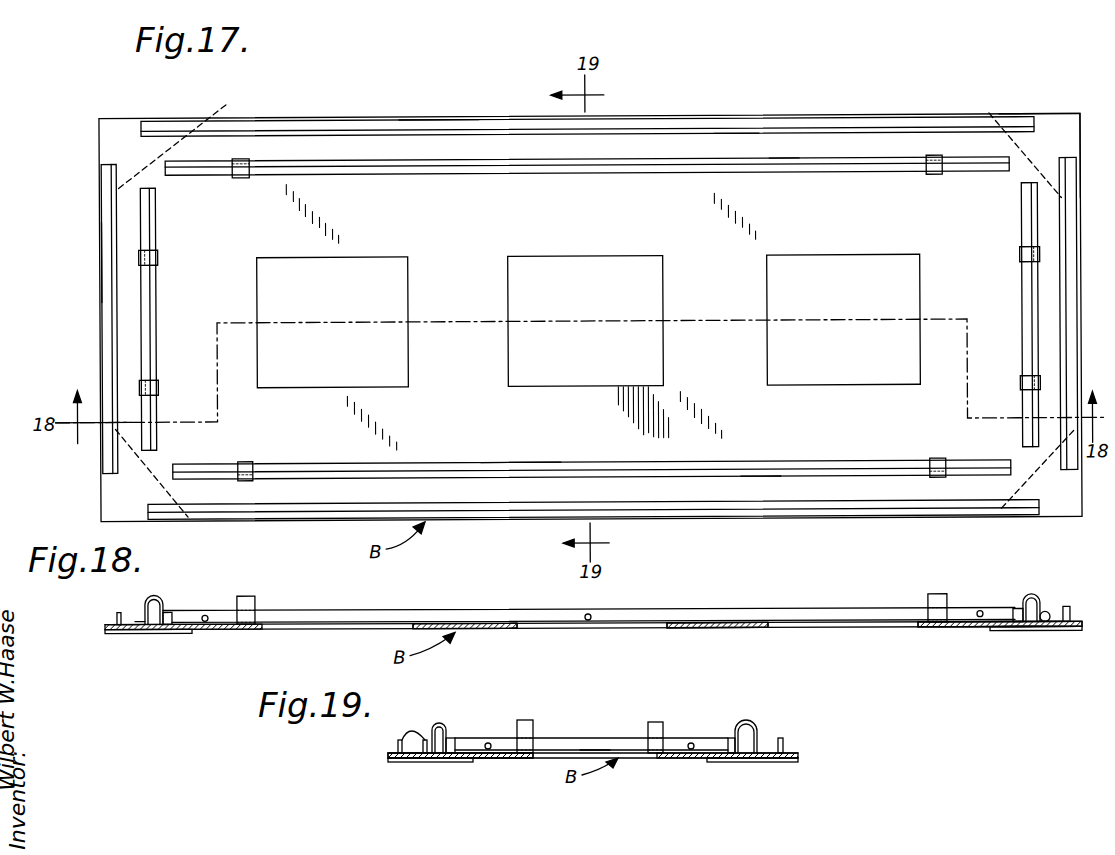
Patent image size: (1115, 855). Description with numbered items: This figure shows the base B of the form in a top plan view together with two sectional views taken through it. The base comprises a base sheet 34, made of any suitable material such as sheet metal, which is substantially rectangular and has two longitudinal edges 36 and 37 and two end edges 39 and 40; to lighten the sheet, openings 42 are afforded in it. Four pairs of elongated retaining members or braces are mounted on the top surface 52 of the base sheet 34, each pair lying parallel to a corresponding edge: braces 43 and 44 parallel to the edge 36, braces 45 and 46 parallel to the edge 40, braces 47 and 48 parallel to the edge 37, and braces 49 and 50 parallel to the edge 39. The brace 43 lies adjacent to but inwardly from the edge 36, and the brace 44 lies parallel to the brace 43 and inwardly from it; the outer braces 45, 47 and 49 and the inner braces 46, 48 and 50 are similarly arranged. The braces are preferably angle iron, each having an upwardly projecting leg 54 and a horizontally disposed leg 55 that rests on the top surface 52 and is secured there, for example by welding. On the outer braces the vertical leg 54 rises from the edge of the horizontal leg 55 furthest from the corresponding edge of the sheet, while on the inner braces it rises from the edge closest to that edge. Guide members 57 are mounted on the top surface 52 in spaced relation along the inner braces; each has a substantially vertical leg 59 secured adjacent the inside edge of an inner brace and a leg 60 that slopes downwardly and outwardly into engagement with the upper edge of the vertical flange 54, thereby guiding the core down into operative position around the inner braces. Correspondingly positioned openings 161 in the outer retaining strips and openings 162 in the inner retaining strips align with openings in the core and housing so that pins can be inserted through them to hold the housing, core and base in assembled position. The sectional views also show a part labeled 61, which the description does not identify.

In FIG. 17, the base sheet 34 is at (760, 465).
In FIG. 18, the base sheet 34 is at (725, 630).
In FIG. 19, the base sheet 34 is at (665, 760).
In FIG. 17, the longitudinal edge 36 is at (297, 120).
In FIG. 19, the longitudinal edge 36 is at (800, 760).
In FIG. 17, the longitudinal edge 37 is at (325, 517).
In FIG. 19, the longitudinal edge 37 is at (388, 760).
In FIG. 17, the end edge 39 is at (100, 245).
In FIG. 18, the end edge 39 is at (110, 632).
In FIG. 17, the end edge 40 is at (1081, 116).
In FIG. 18, the end edge 40 is at (1080, 632).
In FIG. 17, the openings 42 is at (383, 256).
In FIG. 18, the openings 42 is at (385, 623).
In FIG. 19, the openings 42 is at (520, 760).
In FIG. 17, the outer brace 43 is at (437, 129).
In FIG. 19, the outer brace 43 is at (782, 738).
In FIG. 17, the inner brace 44 is at (470, 173).
In FIG. 19, the inner brace 44 is at (757, 740).
In FIG. 17, the outer brace 45 is at (1070, 275).
In FIG. 18, the outer brace 45 is at (1067, 610).
In FIG. 17, the inner brace 46 is at (1022, 236).
In FIG. 18, the inner brace 46 is at (1020, 626).
In FIG. 17, the outer brace 47 is at (499, 477).
In FIG. 19, the outer brace 47 is at (398, 742).
In FIG. 17, the inner brace 48 is at (522, 462).
In FIG. 19, the inner brace 48 is at (436, 730).
In FIG. 17, the outer brace 49 is at (110, 330).
In FIG. 18, the outer brace 49 is at (121, 611).
In FIG. 17, the inner brace 50 is at (152, 305).
In FIG. 18, the inner brace 50 is at (145, 615).
In FIG. 19, the inner brace 50 is at (595, 750).
In FIG. 17, the top surface 52 is at (105, 143).
In FIG. 18, the top surface 52 is at (700, 623).
In FIG. 19, the top surface 52 is at (591, 744).
In FIG. 17, the upwardly projecting leg 54 is at (718, 159).
In FIG. 19, the upwardly projecting leg 54 is at (402, 740).
In FIG. 17, the horizontally disposed leg 55 is at (783, 166).
In FIG. 19, the horizontally disposed leg 55 is at (392, 753).
In FIG. 17, the guide member 57 is at (240, 176).
In FIG. 18, the guide member 57 is at (170, 606).
In FIG. 19, the guide member 57 is at (520, 720).
In FIG. 18, the vertical leg 59 is at (178, 615).
In FIG. 19, the vertical leg 59 is at (590, 745).
In FIG. 18, the sloping leg 60 is at (155, 600).
In FIG. 18, the pin 61 is at (1072, 615).
In FIG. 17, the openings 161 is at (1060, 420).
In FIG. 18, the openings 161 is at (117, 617).
In FIG. 17, the openings 162 is at (206, 159).
In FIG. 18, the openings 162 is at (205, 622).
In FIG. 19, the openings 162 is at (488, 750).